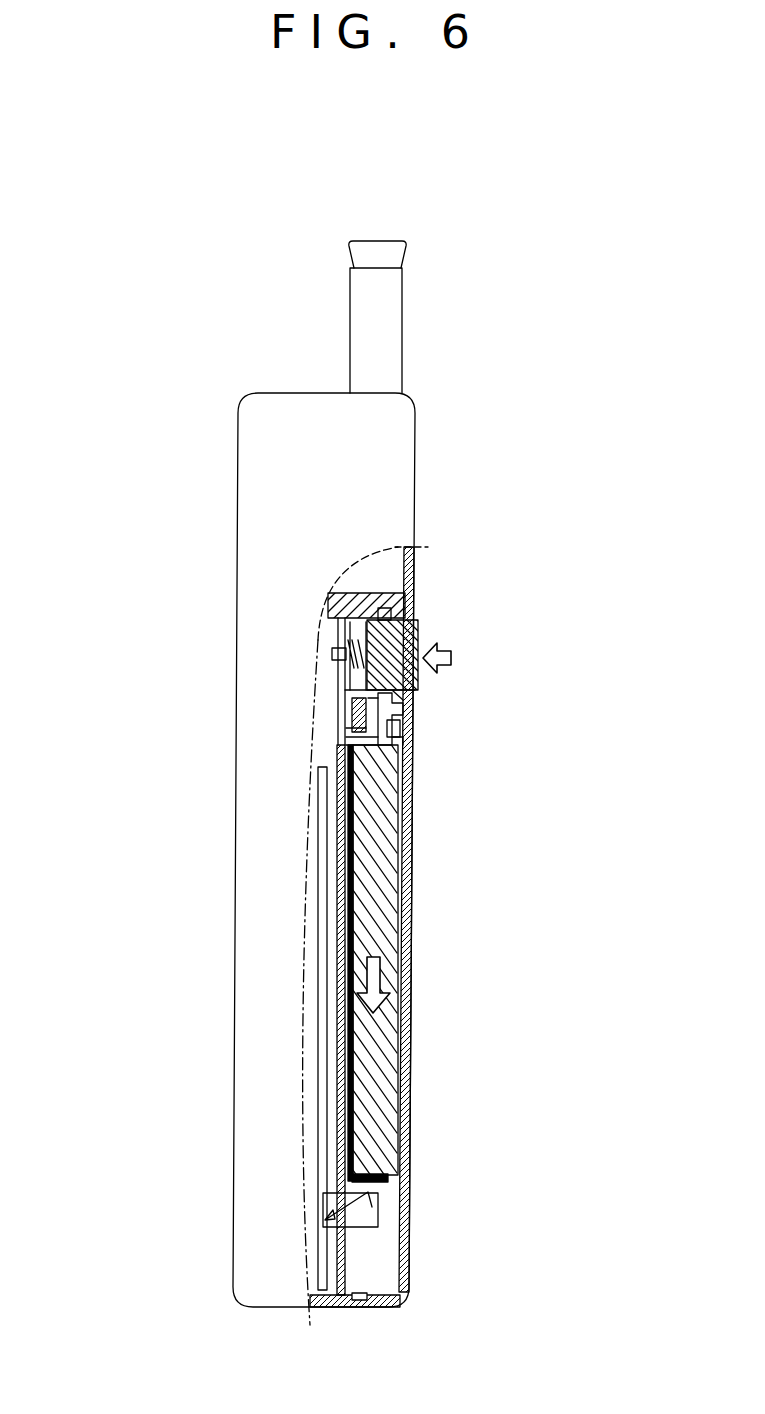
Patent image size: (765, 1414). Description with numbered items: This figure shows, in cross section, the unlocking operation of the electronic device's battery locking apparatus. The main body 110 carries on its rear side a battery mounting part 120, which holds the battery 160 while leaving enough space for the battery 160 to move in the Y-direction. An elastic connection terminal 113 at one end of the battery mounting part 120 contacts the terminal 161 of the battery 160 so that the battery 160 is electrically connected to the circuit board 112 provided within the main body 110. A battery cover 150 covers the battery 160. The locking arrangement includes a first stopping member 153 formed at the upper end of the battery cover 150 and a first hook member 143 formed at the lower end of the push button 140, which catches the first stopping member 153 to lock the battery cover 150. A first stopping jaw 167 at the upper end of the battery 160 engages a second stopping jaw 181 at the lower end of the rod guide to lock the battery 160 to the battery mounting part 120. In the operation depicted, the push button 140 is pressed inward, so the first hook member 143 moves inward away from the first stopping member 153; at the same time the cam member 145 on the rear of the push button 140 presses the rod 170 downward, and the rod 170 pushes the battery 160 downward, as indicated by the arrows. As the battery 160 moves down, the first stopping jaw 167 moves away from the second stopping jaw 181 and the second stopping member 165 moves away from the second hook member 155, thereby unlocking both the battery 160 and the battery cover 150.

The main body 110 is at (226, 472).
The circuit board 112 is at (320, 962).
The elastic connection terminal 113 is at (380, 1195).
The battery mounting part 120 is at (353, 822).
The push button 140 is at (417, 640).
The first hook member 143 is at (404, 700).
The cam member 145 is at (345, 673).
The battery cover 150 is at (413, 968).
The first stopping member 153 is at (417, 688).
The second hook member 155 is at (403, 722).
The battery 160 is at (378, 882).
The terminal 161 is at (388, 1172).
The second stopping member 165 is at (405, 736).
The first stopping jaw 167 is at (352, 737).
The rod 170 is at (350, 718).
The second stopping jaw 181 is at (350, 728).